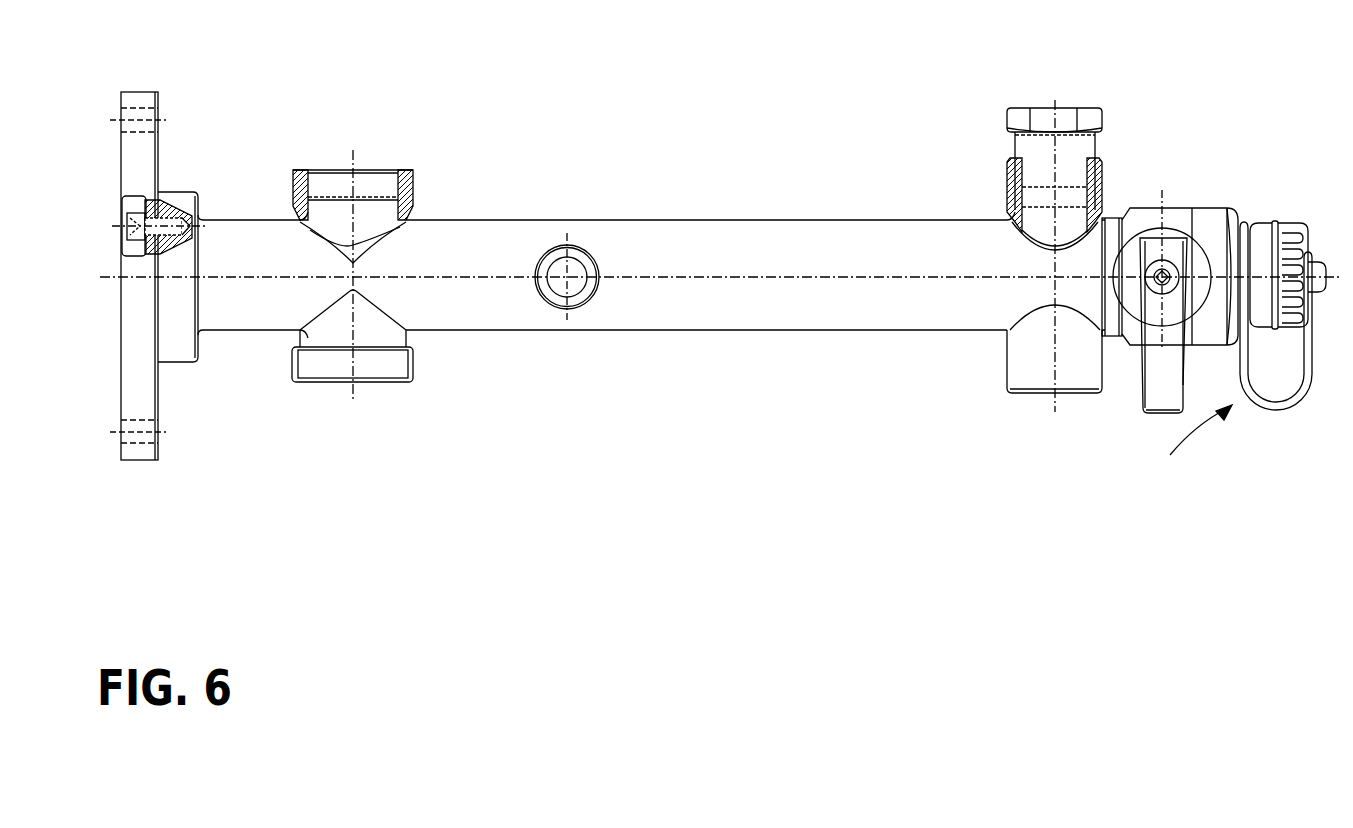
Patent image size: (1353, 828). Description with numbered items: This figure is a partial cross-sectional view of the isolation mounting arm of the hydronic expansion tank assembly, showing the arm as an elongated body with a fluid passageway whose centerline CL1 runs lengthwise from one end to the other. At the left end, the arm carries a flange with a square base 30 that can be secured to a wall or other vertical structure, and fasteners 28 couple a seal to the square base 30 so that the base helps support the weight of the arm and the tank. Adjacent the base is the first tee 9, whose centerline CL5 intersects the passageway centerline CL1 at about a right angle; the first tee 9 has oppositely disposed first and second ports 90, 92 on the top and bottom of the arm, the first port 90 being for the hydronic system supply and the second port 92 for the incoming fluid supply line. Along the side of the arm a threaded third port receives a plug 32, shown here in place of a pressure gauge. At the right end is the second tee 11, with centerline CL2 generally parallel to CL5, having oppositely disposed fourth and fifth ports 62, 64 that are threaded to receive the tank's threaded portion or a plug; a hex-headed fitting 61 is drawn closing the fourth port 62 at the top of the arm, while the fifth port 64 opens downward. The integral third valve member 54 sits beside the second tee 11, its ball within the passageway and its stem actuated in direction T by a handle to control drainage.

The first tee 9 is at (350, 278).
The second tee 11 is at (1052, 278).
The fasteners 28 is at (121, 232).
The square base 30 is at (135, 148).
The plug 32 is at (590, 257).
The third valve member 54 is at (1165, 275).
The hex plug 61 is at (1092, 117).
The fourth port 62 is at (1010, 175).
The fifth port 64 is at (1007, 385).
The first port 90 is at (292, 212).
The second port 92 is at (412, 363).
The centerline of the fluid passageway CL1 is at (440, 272).
The centerline of the second tee CL2 is at (1055, 172).
The centerline of the first tee CL5 is at (353, 190).
The direction of stem actuation T is at (1201, 459).